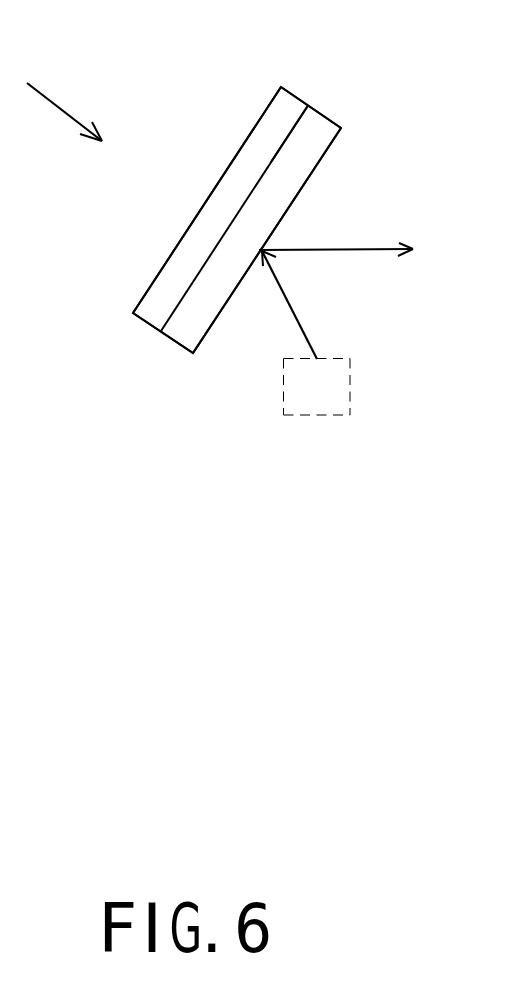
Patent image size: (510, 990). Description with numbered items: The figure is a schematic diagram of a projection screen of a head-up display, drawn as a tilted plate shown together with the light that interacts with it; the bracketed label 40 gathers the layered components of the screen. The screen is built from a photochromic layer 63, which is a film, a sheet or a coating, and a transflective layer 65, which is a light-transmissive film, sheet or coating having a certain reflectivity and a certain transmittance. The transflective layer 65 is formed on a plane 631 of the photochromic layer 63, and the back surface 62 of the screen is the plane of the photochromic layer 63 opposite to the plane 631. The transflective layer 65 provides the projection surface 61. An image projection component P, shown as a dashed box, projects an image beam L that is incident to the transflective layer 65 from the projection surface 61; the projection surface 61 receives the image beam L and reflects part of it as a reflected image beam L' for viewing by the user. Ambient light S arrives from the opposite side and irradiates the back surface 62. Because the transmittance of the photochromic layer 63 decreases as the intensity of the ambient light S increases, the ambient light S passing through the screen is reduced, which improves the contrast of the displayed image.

The optical module 40 is at (233, 466).
The projection surface 61 is at (210, 329).
The back surface 62 is at (135, 304).
The photochromic layer 63 is at (150, 318).
The plane 631 is at (298, 130).
The transflective layer 65 is at (188, 320).
The ambient light S is at (61, 102).
The image beam L is at (321, 305).
The reflected image beam L' is at (345, 217).
The image projection component P is at (312, 396).